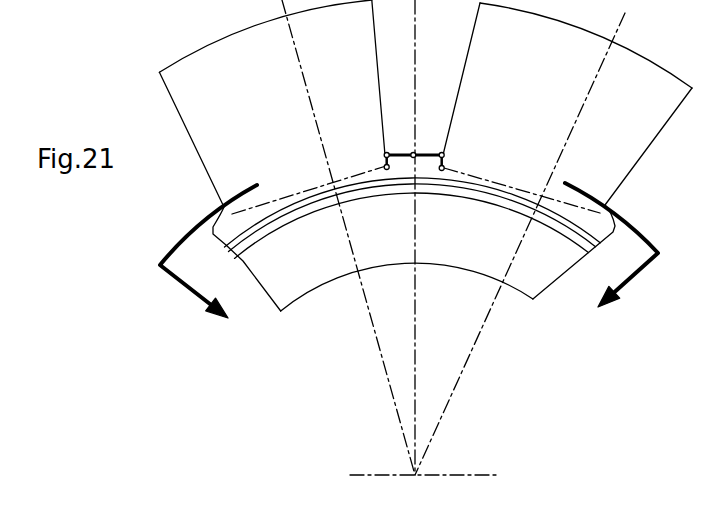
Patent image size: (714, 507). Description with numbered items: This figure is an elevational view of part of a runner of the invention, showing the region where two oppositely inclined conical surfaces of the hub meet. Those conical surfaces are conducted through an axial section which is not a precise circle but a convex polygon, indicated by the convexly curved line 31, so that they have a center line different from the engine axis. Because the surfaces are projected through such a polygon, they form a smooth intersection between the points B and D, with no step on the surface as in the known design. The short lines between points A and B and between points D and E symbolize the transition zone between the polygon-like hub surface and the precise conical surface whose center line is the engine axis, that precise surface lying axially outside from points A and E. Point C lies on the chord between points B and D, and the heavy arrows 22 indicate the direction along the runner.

The line 31 is at (278, 193).
The rotor rotation direction arrows 22 is at (409, 259).
The point A is at (442, 171).
The point B is at (445, 152).
The point C is at (421, 144).
The point D is at (383, 152).
The point E is at (386, 170).